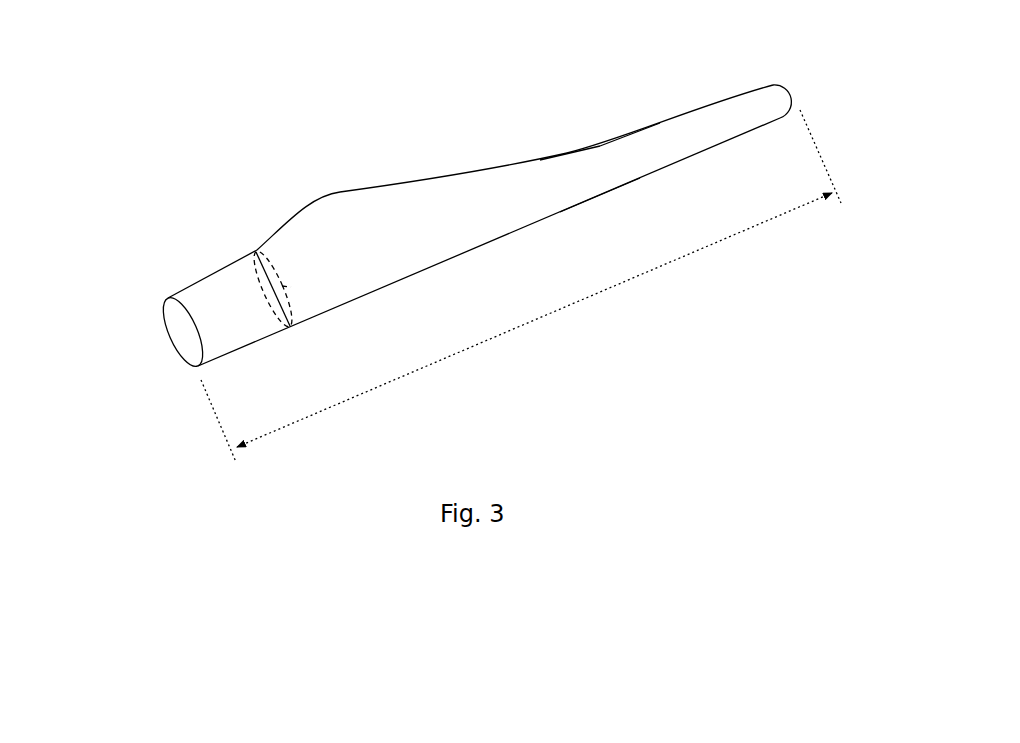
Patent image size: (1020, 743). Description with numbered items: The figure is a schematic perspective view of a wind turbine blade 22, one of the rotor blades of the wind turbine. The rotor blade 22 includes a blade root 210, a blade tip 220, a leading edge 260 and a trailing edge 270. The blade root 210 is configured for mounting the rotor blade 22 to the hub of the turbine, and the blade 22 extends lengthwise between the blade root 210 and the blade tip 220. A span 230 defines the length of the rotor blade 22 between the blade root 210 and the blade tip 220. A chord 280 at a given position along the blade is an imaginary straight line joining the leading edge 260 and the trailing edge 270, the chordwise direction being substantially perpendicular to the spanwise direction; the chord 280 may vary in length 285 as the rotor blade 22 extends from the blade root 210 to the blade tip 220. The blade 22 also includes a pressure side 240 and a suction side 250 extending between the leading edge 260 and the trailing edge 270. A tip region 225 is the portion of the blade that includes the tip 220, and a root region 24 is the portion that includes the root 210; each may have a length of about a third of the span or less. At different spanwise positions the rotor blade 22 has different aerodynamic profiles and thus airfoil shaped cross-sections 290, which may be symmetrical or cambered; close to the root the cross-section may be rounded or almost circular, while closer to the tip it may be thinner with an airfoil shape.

The wind turbine blade 22 is at (258, 120).
The root region 24 is at (262, 343).
The blade root 210 is at (146, 344).
The blade tip 220 is at (804, 89).
The tip region 225 is at (634, 137).
The span 230 is at (533, 323).
The pressure side 240 is at (345, 226).
The suction side 250 is at (543, 207).
The leading edge 260 is at (587, 203).
The trailing edge 270 is at (537, 163).
The chord 280 is at (252, 282).
The chord length 285 is at (566, 153).
The airfoil shaped cross-section 290 is at (280, 273).